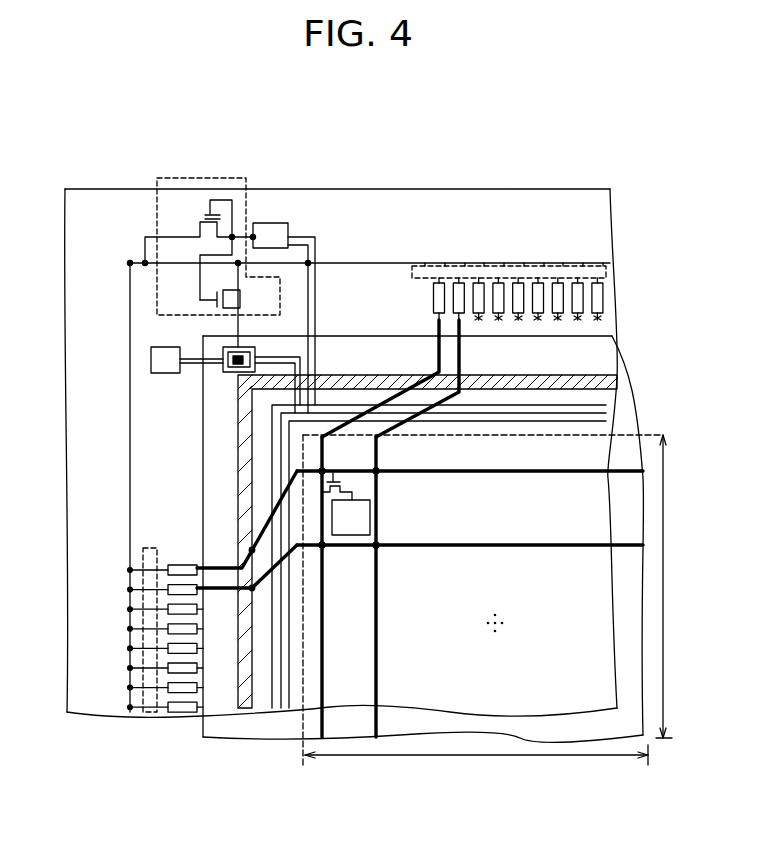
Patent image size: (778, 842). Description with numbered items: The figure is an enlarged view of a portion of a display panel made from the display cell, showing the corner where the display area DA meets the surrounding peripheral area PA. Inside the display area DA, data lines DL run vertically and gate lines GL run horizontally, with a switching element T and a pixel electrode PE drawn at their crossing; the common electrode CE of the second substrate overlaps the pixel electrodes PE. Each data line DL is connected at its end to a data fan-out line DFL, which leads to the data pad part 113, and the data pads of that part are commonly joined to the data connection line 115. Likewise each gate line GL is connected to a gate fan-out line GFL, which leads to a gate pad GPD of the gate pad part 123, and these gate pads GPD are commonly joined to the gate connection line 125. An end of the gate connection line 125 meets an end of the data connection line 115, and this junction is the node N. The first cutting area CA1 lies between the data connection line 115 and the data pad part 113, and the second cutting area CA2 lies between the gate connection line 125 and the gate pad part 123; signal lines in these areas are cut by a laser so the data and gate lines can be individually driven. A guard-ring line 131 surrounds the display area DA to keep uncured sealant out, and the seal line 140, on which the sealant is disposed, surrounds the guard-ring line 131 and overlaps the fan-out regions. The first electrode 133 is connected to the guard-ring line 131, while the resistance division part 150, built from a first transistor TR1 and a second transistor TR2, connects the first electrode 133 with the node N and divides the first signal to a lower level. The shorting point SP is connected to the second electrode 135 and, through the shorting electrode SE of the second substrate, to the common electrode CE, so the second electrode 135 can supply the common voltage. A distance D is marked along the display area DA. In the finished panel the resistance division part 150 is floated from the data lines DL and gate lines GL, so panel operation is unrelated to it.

The resistance division part 150 is at (212, 237).
The first electrode 133 is at (265, 222).
The data connection line 115 is at (382, 262).
The first cutting area CA1 is at (423, 262).
The peripheral area PA is at (485, 222).
The node N is at (128, 262).
The first transistor TR1 is at (200, 250).
The second transistor TR2 is at (239, 303).
The data pad part 113 is at (545, 239).
The shorting point SP is at (252, 347).
The second electrode 135 is at (151, 357).
The shorting electrode SE is at (221, 372).
The data fan-out line DFL is at (461, 357).
The seal line 140 is at (613, 381).
The guard-ring line 131 is at (604, 411).
The gate connection line 125 is at (130, 482).
The data line DL is at (325, 453).
The switching element T is at (352, 487).
The pixel electrode PE is at (370, 527).
The gate line GL is at (480, 474).
The gate pad GPD is at (180, 563).
The second cutting area CA2 is at (143, 553).
The display area DA is at (500, 600).
The gate fan-out line GFL is at (226, 590).
The gate pad part 123 is at (113, 643).
The common electrode CE is at (273, 727).
The distance D is at (476, 765).